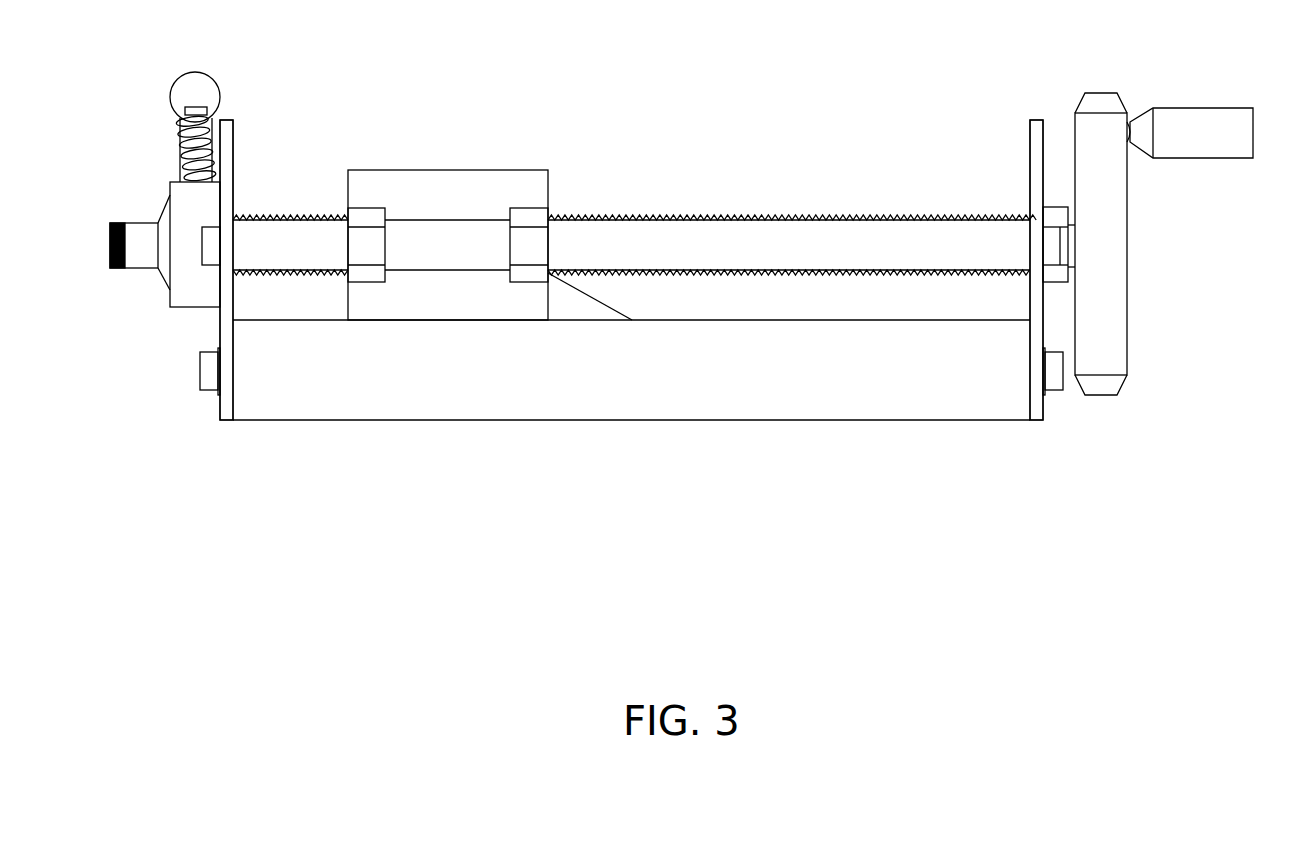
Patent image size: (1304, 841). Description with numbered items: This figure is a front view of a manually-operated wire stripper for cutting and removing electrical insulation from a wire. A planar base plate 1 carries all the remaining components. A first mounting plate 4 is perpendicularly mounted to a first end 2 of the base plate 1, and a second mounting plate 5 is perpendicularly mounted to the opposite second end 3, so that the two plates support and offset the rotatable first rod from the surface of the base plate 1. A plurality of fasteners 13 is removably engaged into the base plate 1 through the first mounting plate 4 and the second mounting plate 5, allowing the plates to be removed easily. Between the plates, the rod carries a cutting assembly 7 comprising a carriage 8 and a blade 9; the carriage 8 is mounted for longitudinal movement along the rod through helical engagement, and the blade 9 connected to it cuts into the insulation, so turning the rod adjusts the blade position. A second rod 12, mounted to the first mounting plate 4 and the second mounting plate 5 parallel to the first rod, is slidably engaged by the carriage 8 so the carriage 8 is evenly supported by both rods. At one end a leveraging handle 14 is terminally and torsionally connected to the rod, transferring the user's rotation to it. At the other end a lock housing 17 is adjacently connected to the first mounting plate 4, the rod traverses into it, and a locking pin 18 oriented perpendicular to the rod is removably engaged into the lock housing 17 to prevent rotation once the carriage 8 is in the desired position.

The base plate 1 is at (652, 436).
The first end 2 is at (240, 389).
The second end 3 is at (1022, 389).
The first mounting plate 4 is at (229, 127).
The second mounting plate 5 is at (1034, 126).
The cutting assembly 7 is at (338, 190).
The carriage 8 is at (540, 176).
The blade 9 is at (605, 311).
The second rod 12 is at (787, 229).
The plurality of fasteners 13 is at (207, 378).
The leveraging handle 14 is at (1228, 116).
The lock housing 17 is at (178, 198).
The locking pin 18 is at (192, 85).